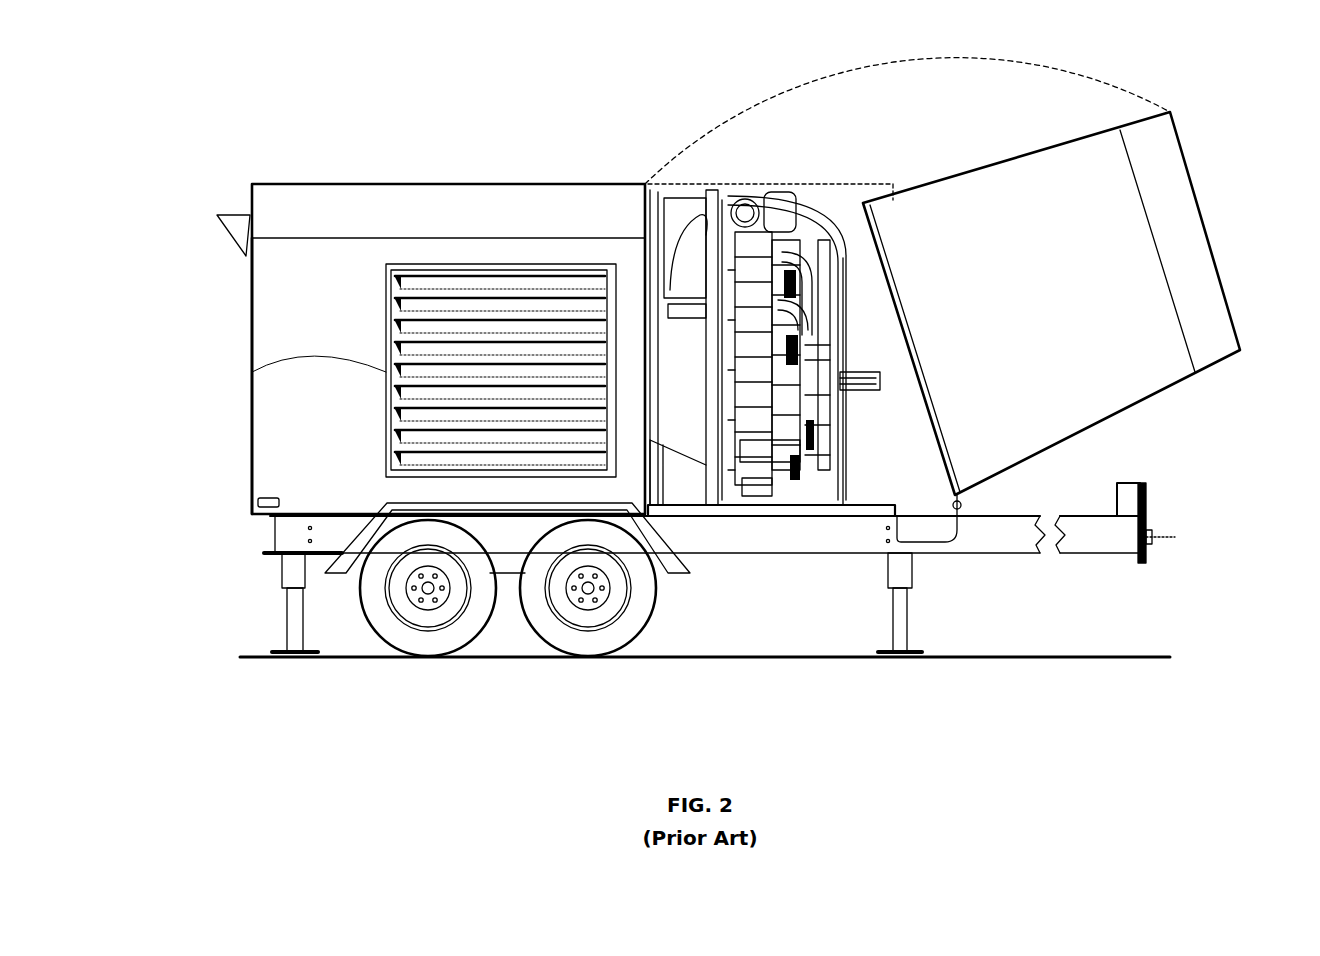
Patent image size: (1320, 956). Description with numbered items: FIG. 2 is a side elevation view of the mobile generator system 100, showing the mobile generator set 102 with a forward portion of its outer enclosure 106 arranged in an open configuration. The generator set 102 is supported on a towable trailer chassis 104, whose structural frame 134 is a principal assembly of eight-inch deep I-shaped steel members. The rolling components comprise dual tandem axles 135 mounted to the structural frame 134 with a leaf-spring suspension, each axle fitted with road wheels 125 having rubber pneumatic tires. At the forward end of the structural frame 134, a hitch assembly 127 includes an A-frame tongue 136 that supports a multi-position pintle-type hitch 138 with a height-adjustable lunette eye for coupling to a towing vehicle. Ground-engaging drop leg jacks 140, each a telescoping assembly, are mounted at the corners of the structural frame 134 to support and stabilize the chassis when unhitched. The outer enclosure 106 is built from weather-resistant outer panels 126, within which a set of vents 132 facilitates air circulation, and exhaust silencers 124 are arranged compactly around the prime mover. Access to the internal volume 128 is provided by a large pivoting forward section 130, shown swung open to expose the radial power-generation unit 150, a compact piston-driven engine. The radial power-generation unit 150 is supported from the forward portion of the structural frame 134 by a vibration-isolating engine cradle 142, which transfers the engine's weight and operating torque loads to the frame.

The generator set 100 is at (235, 137).
The mobile generator set 102 is at (350, 165).
The towable trailer chassis 104 is at (255, 565).
The outer enclosure 106 is at (252, 443).
The exhaust silencers 124 is at (240, 225).
The road wheels 125 is at (665, 603).
The outer panels 126 is at (285, 302).
The hitch assembly 127 is at (1190, 462).
The internal volume 128 is at (665, 486).
The pivoting forward section 130 is at (1222, 238).
The vents 132 is at (386, 375).
The structural frame 134 is at (275, 541).
The dual tandem axles 135 is at (487, 676).
The A-frame tongue 136 is at (1080, 555).
The pintle-type hitch 138 is at (1163, 518).
The drop leg jacks 140 is at (292, 612).
The engine cradle 142 is at (822, 452).
The radial power-generation unit 150 is at (790, 172).